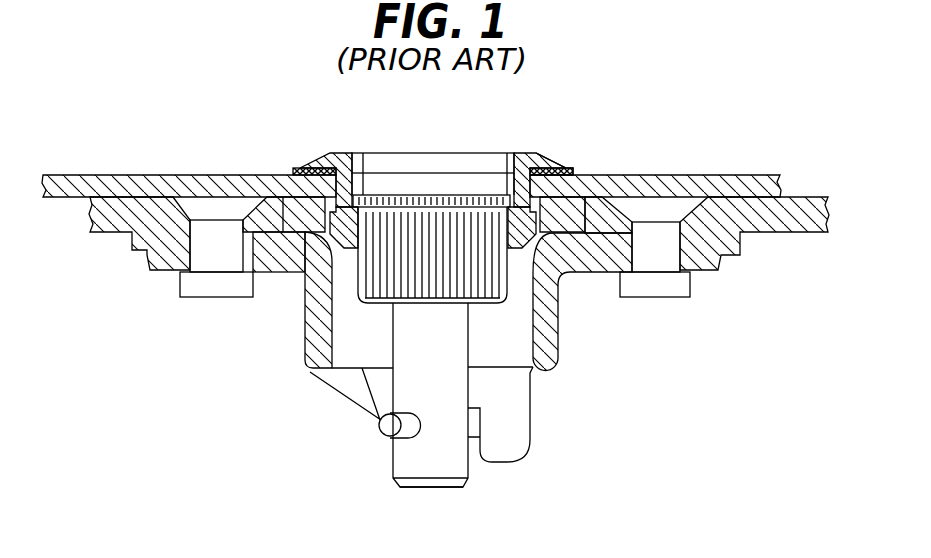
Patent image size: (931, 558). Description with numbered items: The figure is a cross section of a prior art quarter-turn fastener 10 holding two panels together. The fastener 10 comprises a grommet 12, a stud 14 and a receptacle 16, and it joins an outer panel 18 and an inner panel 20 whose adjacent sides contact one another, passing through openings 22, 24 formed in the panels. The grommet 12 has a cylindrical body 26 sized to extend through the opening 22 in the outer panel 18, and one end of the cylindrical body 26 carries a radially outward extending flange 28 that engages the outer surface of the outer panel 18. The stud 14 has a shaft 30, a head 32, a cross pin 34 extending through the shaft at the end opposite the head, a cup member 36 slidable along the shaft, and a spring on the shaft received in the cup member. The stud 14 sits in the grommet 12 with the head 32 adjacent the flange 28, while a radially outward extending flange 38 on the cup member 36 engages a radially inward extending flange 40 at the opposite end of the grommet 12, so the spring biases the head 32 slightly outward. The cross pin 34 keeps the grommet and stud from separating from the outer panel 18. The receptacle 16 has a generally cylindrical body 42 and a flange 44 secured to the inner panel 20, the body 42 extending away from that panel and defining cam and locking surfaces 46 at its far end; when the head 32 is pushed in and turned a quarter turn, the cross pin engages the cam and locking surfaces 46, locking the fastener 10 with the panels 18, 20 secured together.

The fastener 10 is at (213, 118).
The grommet 12 is at (549, 149).
The stud 14 is at (456, 491).
The receptacle 16 is at (303, 357).
The outer panel 18 is at (110, 172).
The inner panel 20 is at (107, 232).
The opening 22 is at (355, 153).
The opening 24 is at (300, 275).
The cylindrical body 26 is at (530, 115).
The radially outward extending flange 28 is at (313, 166).
The shaft 30 is at (400, 466).
The head 32 is at (415, 160).
The cross pin 34 is at (378, 429).
The cup member 36 is at (375, 305).
The radially outward extending flange 38 is at (460, 194).
The radially inward extending flange 40 is at (526, 250).
The cylindrical body 42 is at (560, 322).
The flange 44 is at (713, 266).
The cam and locking surfaces 46 is at (340, 397).